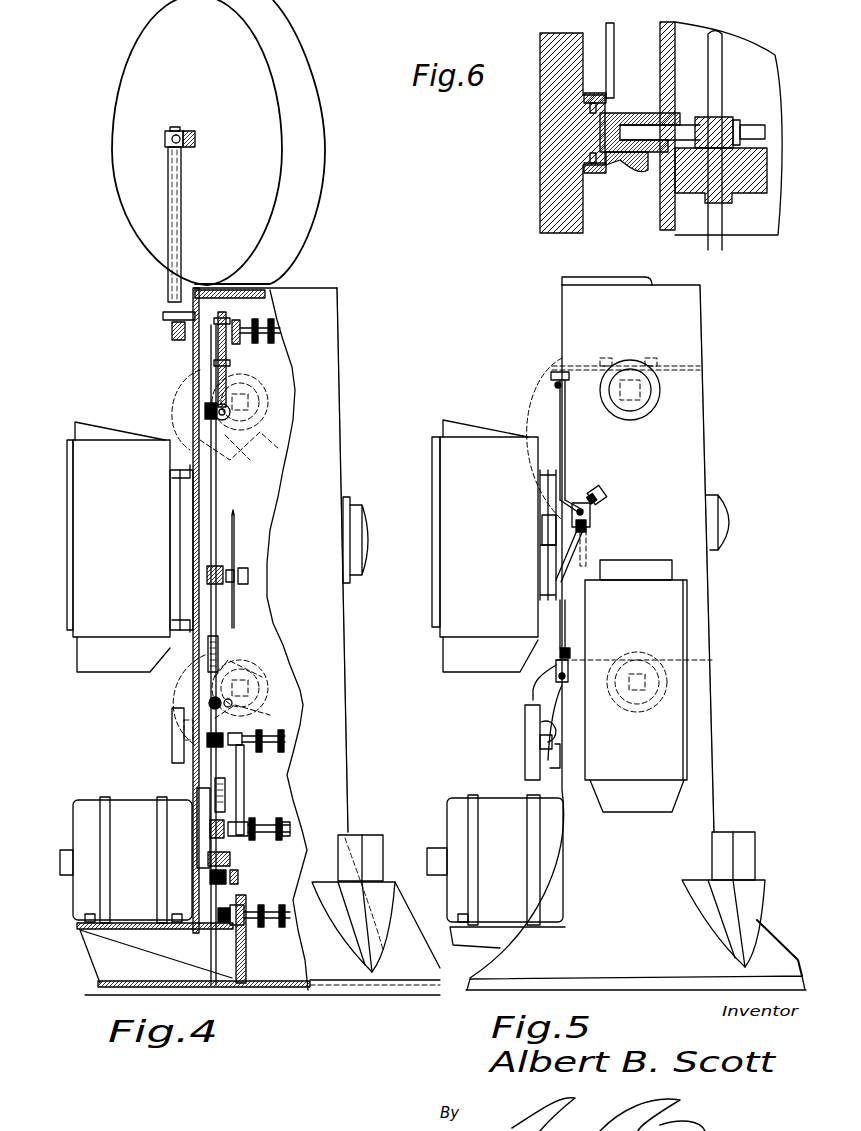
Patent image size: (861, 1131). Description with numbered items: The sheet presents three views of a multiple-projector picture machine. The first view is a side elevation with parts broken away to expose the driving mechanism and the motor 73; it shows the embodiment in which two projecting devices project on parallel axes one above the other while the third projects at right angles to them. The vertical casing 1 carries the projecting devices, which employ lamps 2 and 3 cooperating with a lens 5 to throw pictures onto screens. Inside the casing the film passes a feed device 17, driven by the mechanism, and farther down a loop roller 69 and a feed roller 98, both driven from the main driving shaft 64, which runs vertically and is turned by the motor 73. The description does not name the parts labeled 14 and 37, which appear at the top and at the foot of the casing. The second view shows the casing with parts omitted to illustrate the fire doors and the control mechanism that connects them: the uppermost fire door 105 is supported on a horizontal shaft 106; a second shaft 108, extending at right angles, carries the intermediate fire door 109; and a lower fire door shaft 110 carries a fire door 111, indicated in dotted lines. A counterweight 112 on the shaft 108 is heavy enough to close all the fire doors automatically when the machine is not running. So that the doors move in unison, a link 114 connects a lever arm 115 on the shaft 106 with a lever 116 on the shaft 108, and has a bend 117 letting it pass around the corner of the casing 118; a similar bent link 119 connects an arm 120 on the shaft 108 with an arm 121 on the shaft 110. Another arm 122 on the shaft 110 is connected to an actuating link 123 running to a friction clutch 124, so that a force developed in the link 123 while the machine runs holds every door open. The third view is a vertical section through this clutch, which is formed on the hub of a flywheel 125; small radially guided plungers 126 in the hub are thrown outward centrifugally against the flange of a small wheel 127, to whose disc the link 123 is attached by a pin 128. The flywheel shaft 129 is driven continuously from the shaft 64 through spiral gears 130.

In FIG. 4, the vertical casing 1 is at (347, 409).
In FIG. 5, the vertical casing 1 is at (708, 319).
In FIG. 5, the lamp 2 is at (670, 790).
In FIG. 4, the lamp 3 is at (78, 512).
In FIG. 5, the lamp 3 is at (443, 610).
In FIG. 4, the lens 5 is at (364, 530).
In FIG. 5, the lens 5 is at (722, 505).
In FIG. 4, the mixing bowl 14 is at (318, 178).
In FIG. 4, the feed device 17 is at (262, 320).
In FIG. 4, the foot pedal 37 is at (383, 852).
In FIG. 5, the foot pedal 37 is at (750, 857).
In FIG. 4, the main driving shaft 64 is at (218, 486).
In FIG. 6, the main driving shaft 64 is at (722, 75).
In FIG. 4, the loop roller 69 is at (246, 766).
In FIG. 4, the motor 73 is at (75, 825).
In FIG. 5, the motor 73 is at (462, 800).
In FIG. 4, the feed roller 98 is at (268, 820).
In FIG. 5, the uppermost fire door 105 is at (652, 410).
In FIG. 5, the shaft 106 is at (677, 366).
In FIG. 5, the shaft 108 is at (590, 516).
In FIG. 5, the intermediate fire door 109 is at (590, 548).
In FIG. 5, the lower fire door shaft 110 is at (670, 655).
In FIG. 5, the fire door 111 is at (622, 712).
In FIG. 5, the counterweight 112 is at (606, 500).
In FIG. 5, the link 114 is at (567, 432).
In FIG. 5, the lever arm 115 is at (566, 385).
In FIG. 5, the lever 116 is at (576, 506).
In FIG. 5, the bend 117 is at (557, 500).
In FIG. 4, the casing 118 is at (357, 723).
In FIG. 5, the casing 118 is at (712, 461).
In FIG. 5, the bent link 119 is at (548, 590).
In FIG. 5, the arm 120 is at (588, 528).
In FIG. 5, the arm 121 is at (568, 652).
In FIG. 5, the arm 122 is at (570, 676).
In FIG. 5, the actuating link 123 is at (533, 690).
In FIG. 6, the actuating link 123 is at (606, 30).
In FIG. 5, the friction clutch 124 is at (540, 740).
In FIG. 6, the friction clutch 124 is at (599, 82).
In FIG. 5, the flywheel 125 is at (530, 768).
In FIG. 6, the flywheel 125 is at (540, 178).
In FIG. 6, the plungers 126 is at (596, 173).
In FIG. 6, the small wheel 127 is at (624, 168).
In FIG. 5, the pin 128 is at (541, 720).
In FIG. 6, the pin 128 is at (615, 100).
In FIG. 6, the shaft 129 is at (672, 128).
In FIG. 6, the spiral gears 130 is at (732, 115).